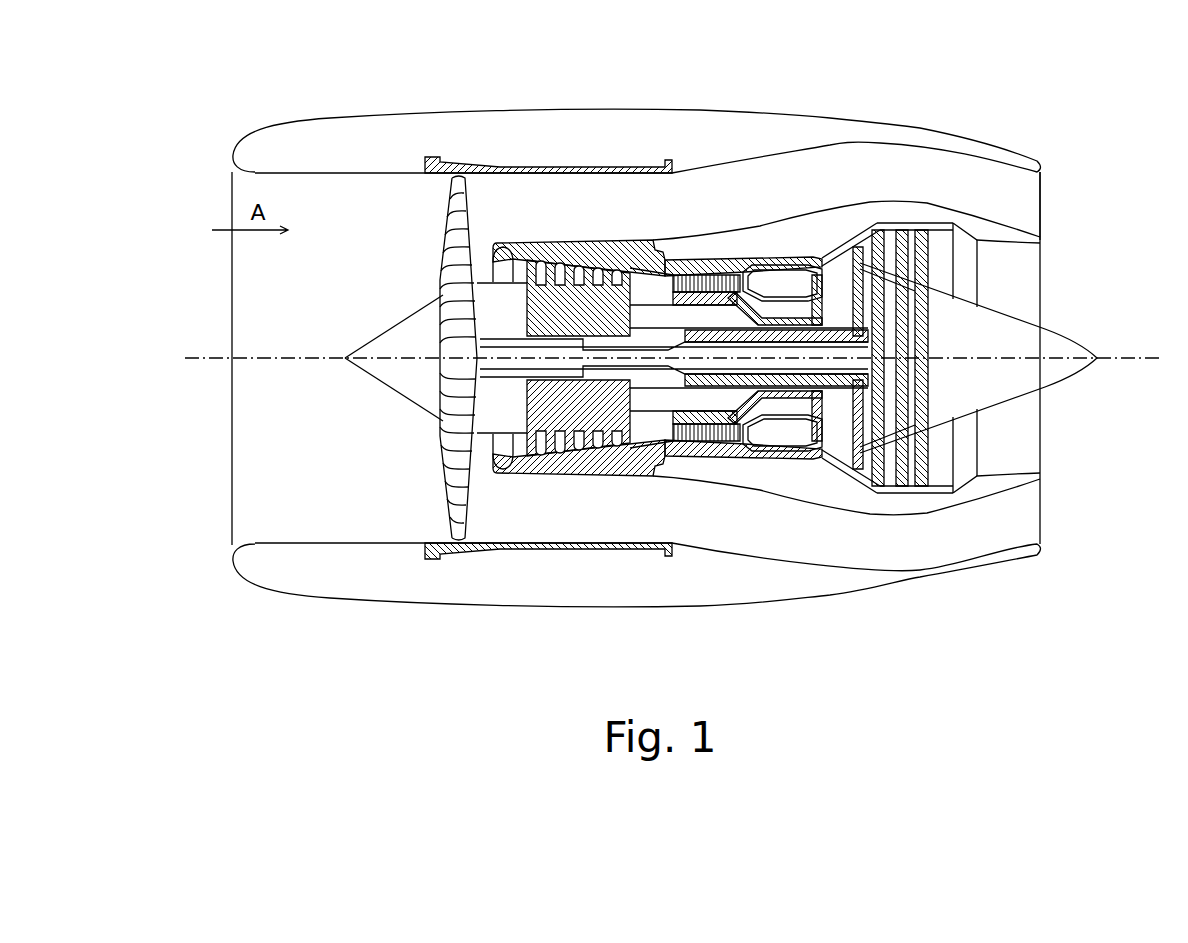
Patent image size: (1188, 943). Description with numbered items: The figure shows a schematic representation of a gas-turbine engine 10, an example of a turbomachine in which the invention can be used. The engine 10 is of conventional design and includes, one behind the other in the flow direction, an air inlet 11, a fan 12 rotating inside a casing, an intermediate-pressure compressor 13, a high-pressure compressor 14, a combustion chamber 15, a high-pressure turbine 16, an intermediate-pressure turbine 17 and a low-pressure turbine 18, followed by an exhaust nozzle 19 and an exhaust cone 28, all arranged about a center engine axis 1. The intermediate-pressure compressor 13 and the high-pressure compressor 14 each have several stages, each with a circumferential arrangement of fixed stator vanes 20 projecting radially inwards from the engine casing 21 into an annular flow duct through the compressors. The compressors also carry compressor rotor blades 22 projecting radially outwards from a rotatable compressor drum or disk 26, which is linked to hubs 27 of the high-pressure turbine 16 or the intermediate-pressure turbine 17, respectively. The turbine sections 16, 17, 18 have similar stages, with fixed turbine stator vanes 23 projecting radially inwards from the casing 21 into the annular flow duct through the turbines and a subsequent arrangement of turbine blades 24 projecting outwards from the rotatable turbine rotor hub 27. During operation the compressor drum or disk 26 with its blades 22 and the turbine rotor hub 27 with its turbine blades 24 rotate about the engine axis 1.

The engine axis 1 is at (300, 360).
The gas-turbine engine 10 is at (816, 165).
The air inlet 11 is at (380, 225).
The fan 12 is at (447, 162).
The intermediate-pressure compressor 13 is at (602, 300).
The high-pressure compressor 14 is at (722, 270).
The combustion chamber 15 is at (790, 266).
The high-pressure turbine 16 is at (817, 262).
The intermediate-pressure turbine 17 is at (872, 242).
The low-pressure turbine 18 is at (960, 225).
The exhaust nozzle 19 is at (965, 283).
The compressor stator vanes 20 is at (545, 470).
The engine casing 21 is at (548, 473).
The compressor rotor blades 22 is at (602, 480).
The turbine stator vanes 23 is at (863, 480).
The turbine blades 24 is at (893, 477).
The compressor drum or disk 26 is at (763, 435).
The turbine rotor hub 27 is at (965, 392).
The exhaust cone 28 is at (1050, 347).